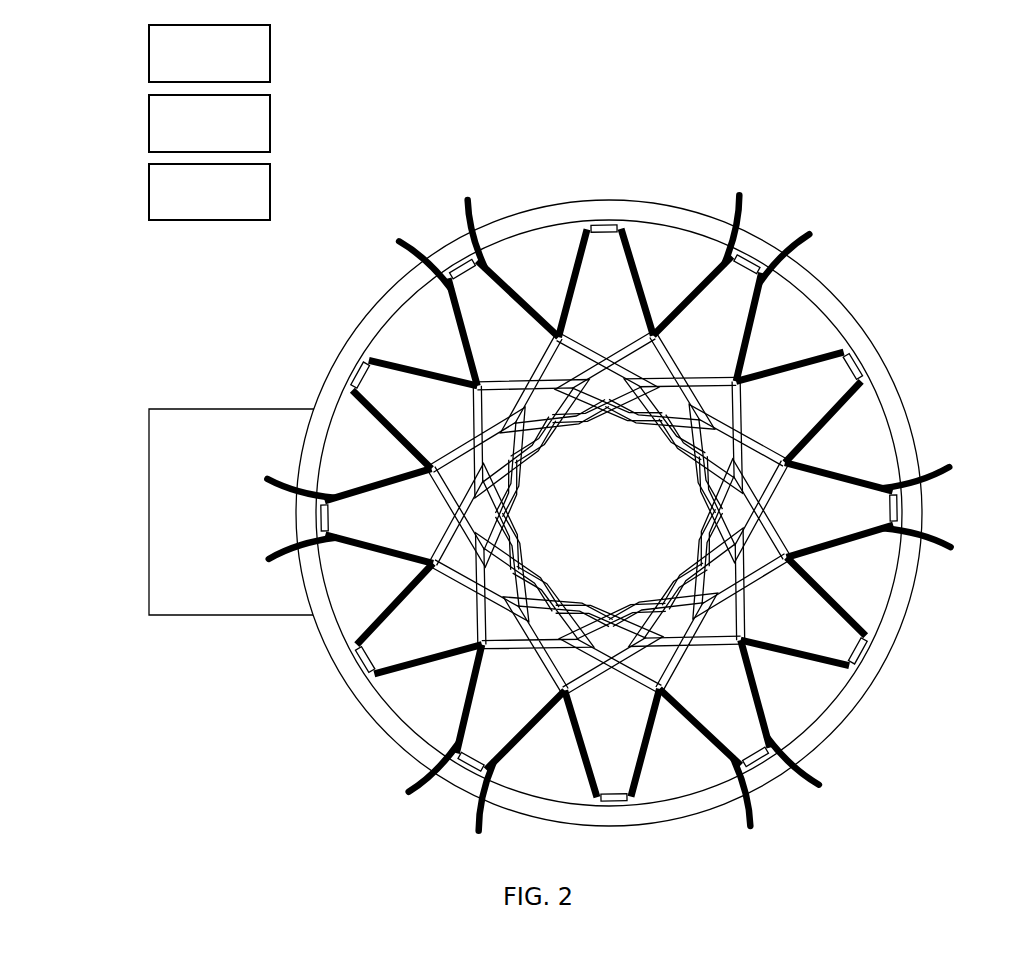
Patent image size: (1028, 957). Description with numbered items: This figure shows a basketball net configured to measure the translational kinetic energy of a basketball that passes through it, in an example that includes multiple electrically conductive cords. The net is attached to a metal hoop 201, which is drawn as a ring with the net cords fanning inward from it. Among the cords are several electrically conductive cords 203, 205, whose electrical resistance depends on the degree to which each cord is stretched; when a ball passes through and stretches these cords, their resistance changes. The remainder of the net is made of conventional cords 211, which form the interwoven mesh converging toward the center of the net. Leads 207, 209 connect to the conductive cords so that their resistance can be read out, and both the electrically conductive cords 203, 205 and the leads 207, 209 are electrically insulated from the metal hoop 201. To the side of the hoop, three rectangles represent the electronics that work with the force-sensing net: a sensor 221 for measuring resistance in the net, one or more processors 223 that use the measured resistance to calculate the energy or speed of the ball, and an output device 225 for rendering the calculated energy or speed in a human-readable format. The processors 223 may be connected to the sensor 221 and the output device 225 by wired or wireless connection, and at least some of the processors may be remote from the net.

The metal hoop 201 is at (567, 204).
The electrically conductive cord 203 is at (629, 226).
The electrically conductive cord 205 is at (767, 317).
The lead 207 is at (808, 240).
The lead 209 is at (938, 470).
The conventional cords 211 is at (556, 433).
The sensor 221 is at (149, 53).
The processor 223 is at (149, 123).
The output device 225 is at (149, 192).